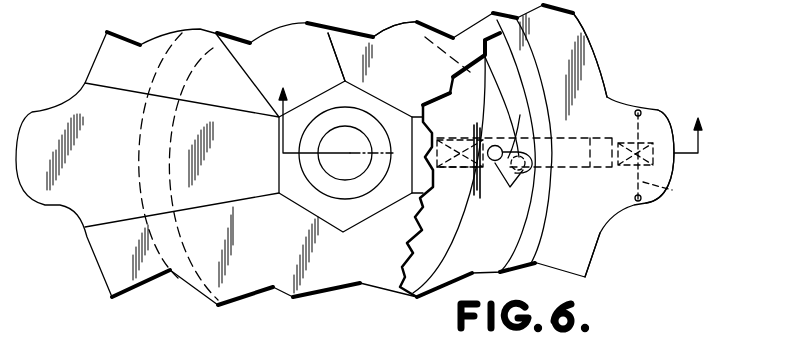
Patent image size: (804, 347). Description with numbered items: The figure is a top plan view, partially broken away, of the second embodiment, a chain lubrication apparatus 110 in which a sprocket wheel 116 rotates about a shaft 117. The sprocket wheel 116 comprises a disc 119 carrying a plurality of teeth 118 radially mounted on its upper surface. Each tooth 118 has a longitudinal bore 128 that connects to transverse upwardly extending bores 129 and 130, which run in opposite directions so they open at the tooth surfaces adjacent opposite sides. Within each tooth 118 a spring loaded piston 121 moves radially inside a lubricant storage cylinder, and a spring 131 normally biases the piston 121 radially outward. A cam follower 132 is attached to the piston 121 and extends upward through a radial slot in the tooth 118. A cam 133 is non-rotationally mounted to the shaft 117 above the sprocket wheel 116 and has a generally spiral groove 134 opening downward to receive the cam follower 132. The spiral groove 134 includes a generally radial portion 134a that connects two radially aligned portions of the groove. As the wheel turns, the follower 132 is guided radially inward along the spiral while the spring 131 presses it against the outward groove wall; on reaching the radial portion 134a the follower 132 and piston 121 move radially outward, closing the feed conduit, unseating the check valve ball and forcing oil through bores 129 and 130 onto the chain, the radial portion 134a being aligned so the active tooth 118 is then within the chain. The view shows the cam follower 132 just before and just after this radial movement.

The chain lubrication apparatus 110 is at (99, 269).
The sprocket wheel 116 is at (590, 36).
The shaft 117 is at (342, 167).
The tooth 118 is at (653, 205).
The disc 119 is at (602, 256).
The piston 121 is at (562, 158).
The longitudinal bore 128 is at (617, 143).
The transverse bore 129 is at (676, 192).
The transverse bore 130 is at (640, 114).
The spring 131 is at (455, 170).
The cam follower 132 is at (510, 181).
The cam 133 is at (415, 78).
The spiral groove 134 is at (478, 90).
The radial portion 134a is at (521, 129).